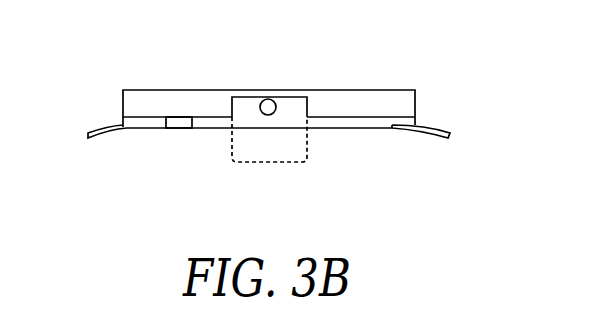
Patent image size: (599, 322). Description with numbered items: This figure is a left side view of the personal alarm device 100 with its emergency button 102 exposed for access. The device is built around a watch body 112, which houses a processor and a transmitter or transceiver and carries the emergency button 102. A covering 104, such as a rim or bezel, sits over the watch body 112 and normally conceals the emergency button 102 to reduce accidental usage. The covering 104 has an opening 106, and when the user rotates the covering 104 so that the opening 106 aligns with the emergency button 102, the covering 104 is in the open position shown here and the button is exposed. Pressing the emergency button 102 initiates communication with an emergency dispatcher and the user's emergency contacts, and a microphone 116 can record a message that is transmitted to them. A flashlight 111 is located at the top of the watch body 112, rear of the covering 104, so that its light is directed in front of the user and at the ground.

The personal alarm device 100 is at (255, 113).
The emergency button 102 is at (270, 100).
The covering 104 is at (394, 100).
The opening 106 is at (232, 165).
The flashlight 111 is at (124, 119).
The watch body 112 is at (342, 123).
The microphone 116 is at (181, 121).